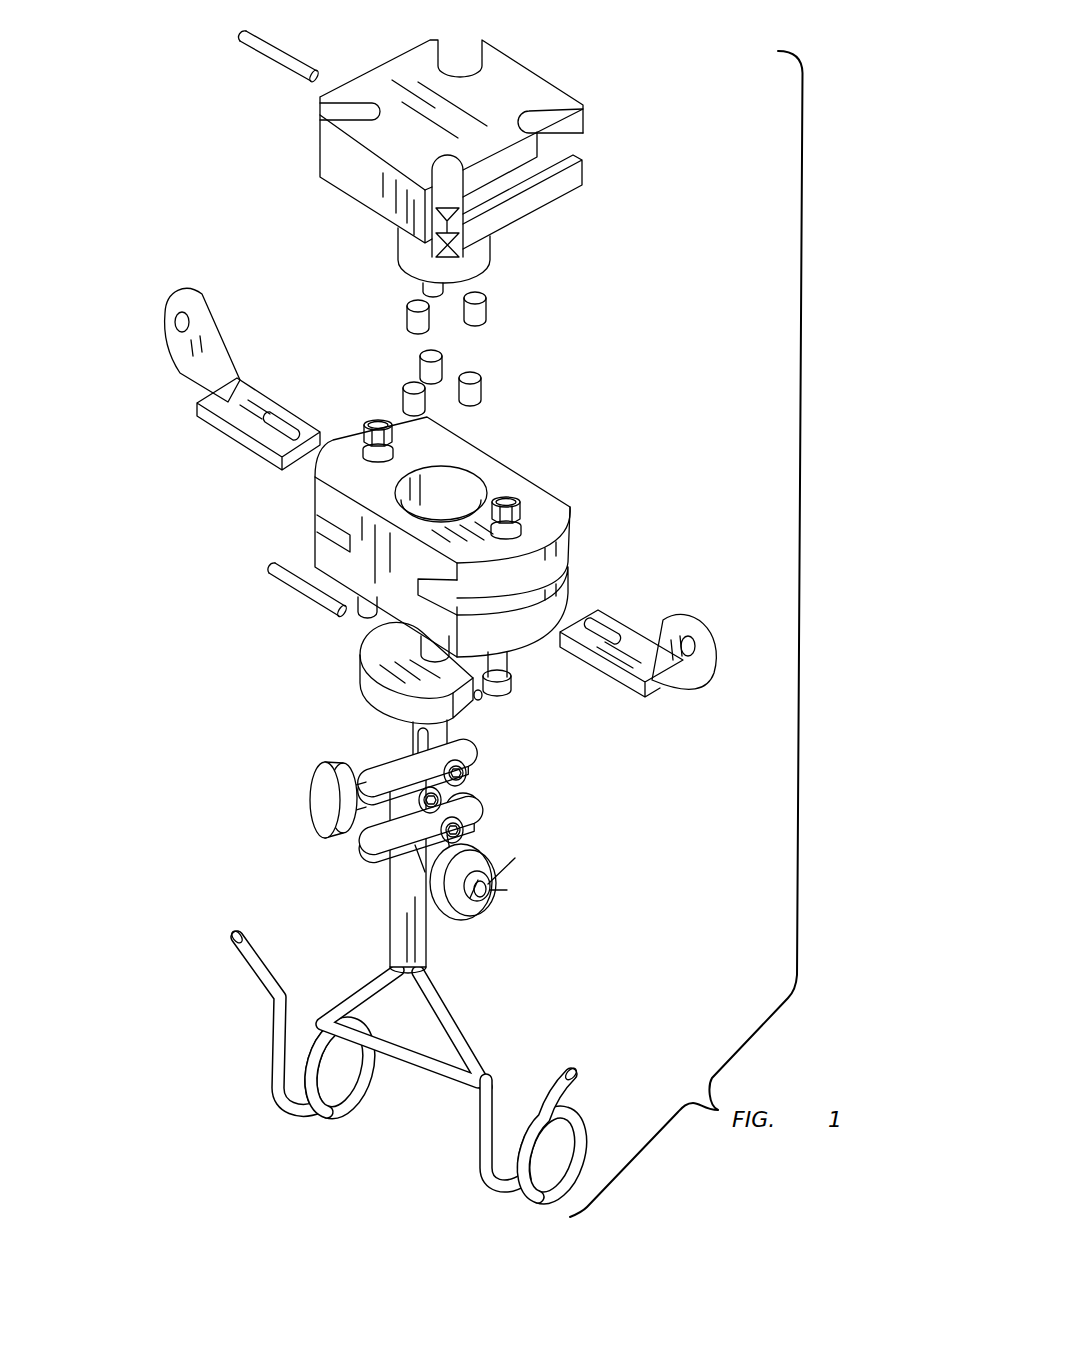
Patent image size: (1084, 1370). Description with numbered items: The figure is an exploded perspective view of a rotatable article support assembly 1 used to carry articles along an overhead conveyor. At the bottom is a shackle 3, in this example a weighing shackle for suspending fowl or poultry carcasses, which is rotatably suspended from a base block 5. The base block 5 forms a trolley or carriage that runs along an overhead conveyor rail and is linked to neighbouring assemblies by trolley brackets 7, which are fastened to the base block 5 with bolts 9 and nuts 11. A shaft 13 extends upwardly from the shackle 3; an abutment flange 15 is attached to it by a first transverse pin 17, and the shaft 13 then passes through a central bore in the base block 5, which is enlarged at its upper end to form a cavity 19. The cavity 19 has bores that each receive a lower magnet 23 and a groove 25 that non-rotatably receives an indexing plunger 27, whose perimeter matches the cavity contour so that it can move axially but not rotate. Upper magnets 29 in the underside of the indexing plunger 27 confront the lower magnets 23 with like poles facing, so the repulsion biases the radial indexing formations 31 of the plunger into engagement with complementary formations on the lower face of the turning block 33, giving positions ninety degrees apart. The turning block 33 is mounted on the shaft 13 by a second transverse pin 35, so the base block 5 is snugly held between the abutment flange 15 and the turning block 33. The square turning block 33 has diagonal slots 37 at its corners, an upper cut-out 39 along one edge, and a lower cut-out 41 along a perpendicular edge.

The rotatable article support assembly 1 is at (674, 292).
The shackle 3 is at (388, 903).
The base block 5 is at (540, 518).
The trolley brackets 7 is at (217, 343).
The bolts 9 is at (508, 663).
The nuts 11 is at (378, 418).
The shaft 13 is at (427, 645).
The abutment flange 15 is at (382, 695).
The first transverse pin 17 is at (307, 597).
The cavity 19 is at (447, 497).
The lower magnets 23 is at (480, 387).
The groove 25 is at (472, 497).
The indexing plunger 27 is at (412, 250).
The upper magnets 29 is at (473, 323).
The indexing formations 31 is at (453, 253).
The turning block 33 is at (492, 88).
The second transverse pin 35 is at (282, 58).
The diagonal slots 37 is at (340, 108).
The upper cut-out 39 is at (508, 187).
The lower cut-out 41 is at (508, 155).